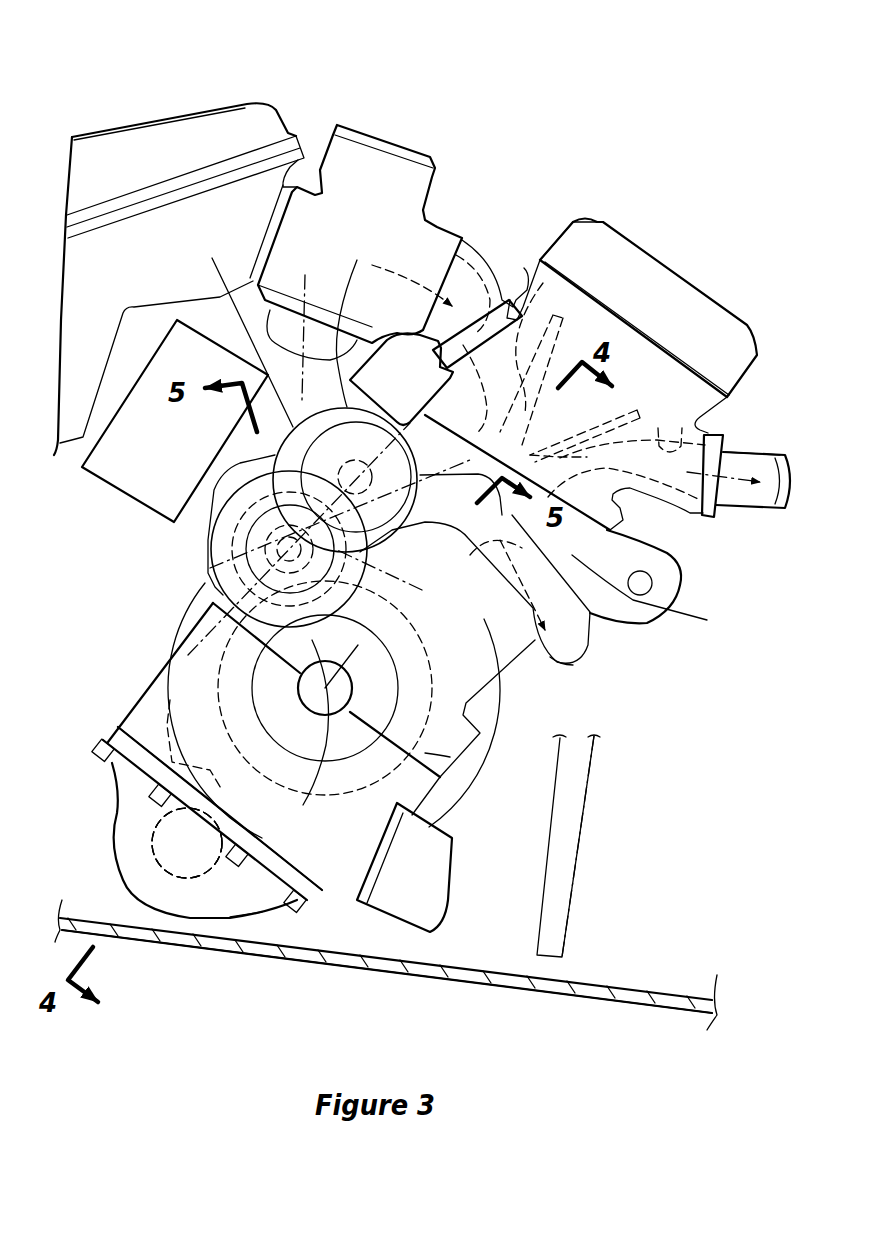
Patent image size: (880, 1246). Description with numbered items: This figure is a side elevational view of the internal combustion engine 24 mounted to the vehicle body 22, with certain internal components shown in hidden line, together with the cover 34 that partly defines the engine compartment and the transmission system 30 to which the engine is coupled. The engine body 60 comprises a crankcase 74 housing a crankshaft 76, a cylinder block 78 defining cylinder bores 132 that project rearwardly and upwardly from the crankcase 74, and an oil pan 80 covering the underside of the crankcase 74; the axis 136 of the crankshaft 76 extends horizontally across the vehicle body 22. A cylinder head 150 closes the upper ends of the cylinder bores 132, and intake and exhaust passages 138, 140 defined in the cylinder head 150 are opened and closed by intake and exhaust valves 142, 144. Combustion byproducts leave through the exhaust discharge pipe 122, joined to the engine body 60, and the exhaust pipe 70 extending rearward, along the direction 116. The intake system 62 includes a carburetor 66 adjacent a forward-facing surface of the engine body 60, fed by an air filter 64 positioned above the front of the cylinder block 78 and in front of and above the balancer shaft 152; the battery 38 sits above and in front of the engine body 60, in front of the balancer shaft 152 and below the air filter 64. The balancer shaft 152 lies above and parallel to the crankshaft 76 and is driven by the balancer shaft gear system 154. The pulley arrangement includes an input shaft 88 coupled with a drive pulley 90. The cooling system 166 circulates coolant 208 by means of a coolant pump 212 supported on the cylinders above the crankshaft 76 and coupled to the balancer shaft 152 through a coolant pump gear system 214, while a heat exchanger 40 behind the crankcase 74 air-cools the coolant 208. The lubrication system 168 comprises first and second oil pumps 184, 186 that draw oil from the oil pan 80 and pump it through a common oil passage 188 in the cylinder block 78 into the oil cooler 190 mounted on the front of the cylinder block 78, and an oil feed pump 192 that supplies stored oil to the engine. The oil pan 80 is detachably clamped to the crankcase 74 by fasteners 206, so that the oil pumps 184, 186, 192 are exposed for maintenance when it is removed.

The vehicle body 22 is at (636, 1008).
The internal combustion engine 24 is at (720, 102).
The transmission system 30 is at (162, 594).
The cover 34 is at (567, 993).
The battery 38 is at (170, 363).
The heat exchanger 40 is at (577, 870).
The engine body 60 is at (652, 157).
The intake system 62 is at (256, 100).
The air filter 64 is at (202, 135).
The carburetor 66 is at (370, 177).
The exhaust pipe 70 is at (758, 516).
The crankcase 74 is at (128, 720).
The crankshaft 76 is at (445, 752).
The cylinder block 78 is at (657, 580).
The oil pan 80 is at (130, 852).
The input shaft 88 is at (338, 690).
The drive pulley 90 is at (160, 630).
The exhaust flow direction 116 is at (737, 477).
The exhaust discharge pipe 122 is at (733, 497).
The cylinder bores 132 is at (540, 632).
The axis of the crankshaft 136 is at (322, 735).
The intake passage 138 is at (510, 365).
The exhaust passage 140 is at (663, 427).
The intake valve 142 is at (543, 283).
The exhaust valve 144 is at (660, 317).
The cylinder head 150 is at (587, 310).
The balancer shaft 152 is at (228, 523).
The balancer shaft gear system 154 is at (397, 578).
The cooling system 166 is at (394, 321).
The lubrication system 168 is at (224, 895).
The first oil pump 184 is at (190, 880).
The second oil pump 186 is at (187, 843).
The common oil passage 188 is at (133, 748).
The oil cooler 190 is at (346, 397).
The oil feed pump 192 is at (187, 843).
The fasteners 206 is at (297, 907).
The coolant 208 is at (590, 613).
The coolant pump 212 is at (239, 330).
The coolant pump gear system 214 is at (303, 324).